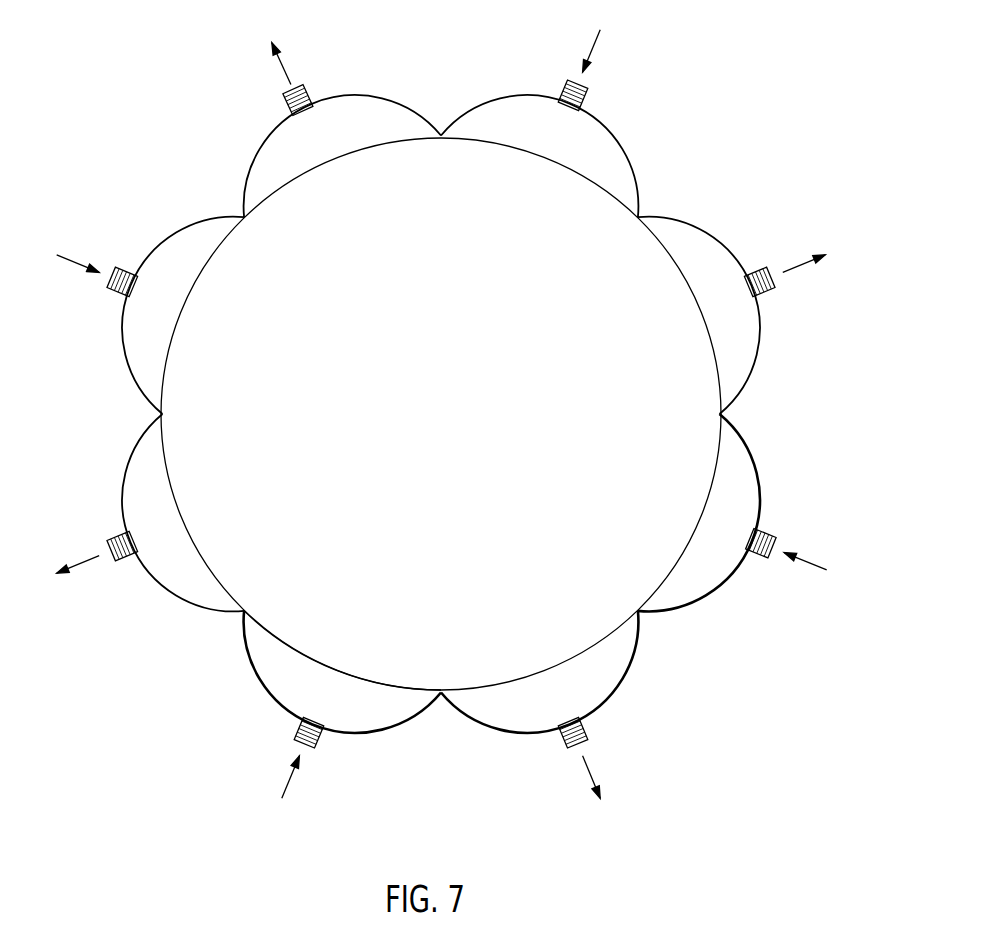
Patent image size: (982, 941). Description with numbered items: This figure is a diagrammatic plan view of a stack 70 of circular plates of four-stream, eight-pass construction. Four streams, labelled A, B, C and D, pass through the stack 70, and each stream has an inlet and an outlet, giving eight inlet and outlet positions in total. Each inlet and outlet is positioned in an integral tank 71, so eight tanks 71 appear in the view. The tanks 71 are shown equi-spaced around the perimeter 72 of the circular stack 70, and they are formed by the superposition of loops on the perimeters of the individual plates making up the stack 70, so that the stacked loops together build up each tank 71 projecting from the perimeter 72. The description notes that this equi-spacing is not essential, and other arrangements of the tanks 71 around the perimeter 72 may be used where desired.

The stack 70 is at (453, 376).
The integral tank 71 is at (273, 168).
The perimeter 72 is at (333, 667).